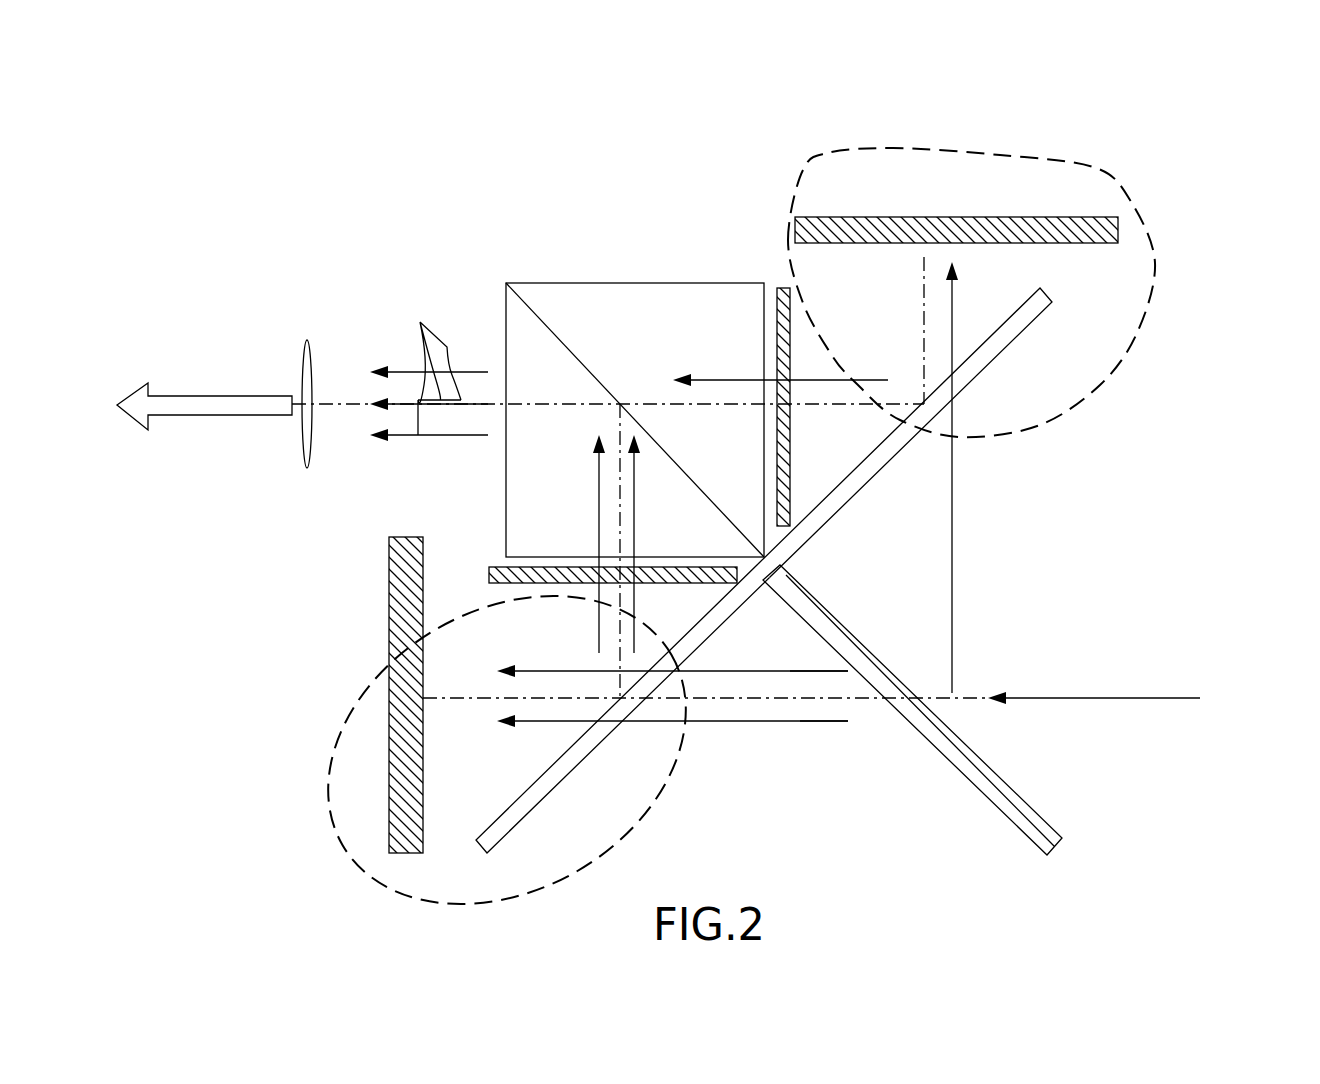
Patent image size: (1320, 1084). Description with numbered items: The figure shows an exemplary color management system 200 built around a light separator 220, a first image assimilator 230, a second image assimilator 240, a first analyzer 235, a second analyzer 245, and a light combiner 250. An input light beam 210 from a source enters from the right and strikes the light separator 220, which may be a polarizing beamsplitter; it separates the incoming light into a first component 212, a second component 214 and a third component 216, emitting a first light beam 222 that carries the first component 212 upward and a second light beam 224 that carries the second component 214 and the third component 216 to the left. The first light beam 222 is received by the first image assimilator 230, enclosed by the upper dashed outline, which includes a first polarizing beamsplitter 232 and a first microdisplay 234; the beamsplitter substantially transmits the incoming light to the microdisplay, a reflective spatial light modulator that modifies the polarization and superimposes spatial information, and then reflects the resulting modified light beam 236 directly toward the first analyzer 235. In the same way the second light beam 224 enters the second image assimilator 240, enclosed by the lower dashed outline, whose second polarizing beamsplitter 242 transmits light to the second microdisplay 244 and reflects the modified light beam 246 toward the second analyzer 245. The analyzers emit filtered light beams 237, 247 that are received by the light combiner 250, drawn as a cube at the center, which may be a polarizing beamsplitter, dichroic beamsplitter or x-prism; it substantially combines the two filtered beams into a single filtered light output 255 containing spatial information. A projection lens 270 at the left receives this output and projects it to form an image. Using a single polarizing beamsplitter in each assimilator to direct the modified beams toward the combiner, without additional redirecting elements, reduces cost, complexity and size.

The color management system 200 is at (1112, 120).
The light beam 210 is at (1200, 698).
The first component 212 is at (952, 515).
The second component 214 is at (748, 670).
The third component 216 is at (745, 722).
The light separator 220 is at (955, 765).
The first light beam 222 is at (950, 548).
The second light beam 224 is at (800, 721).
The first image assimilator 230 is at (1105, 178).
The first polarizing beamsplitter 232 is at (1052, 310).
The first microdisplay 234 is at (888, 216).
The first analyzer 235 is at (783, 290).
The modified light beam 236 is at (866, 380).
The filtered light beam 237 is at (745, 380).
The second image assimilator 240 is at (344, 852).
The second polarizing beamsplitter 242 is at (548, 808).
The second microdisplay 244 is at (424, 780).
The second analyzer 245 is at (486, 572).
The modified light beam 246 is at (600, 637).
The filtered light beam 247 is at (634, 527).
The light combiner 250 is at (592, 355).
The filtered light output 255 is at (429, 367).
The projection lens 270 is at (310, 345).